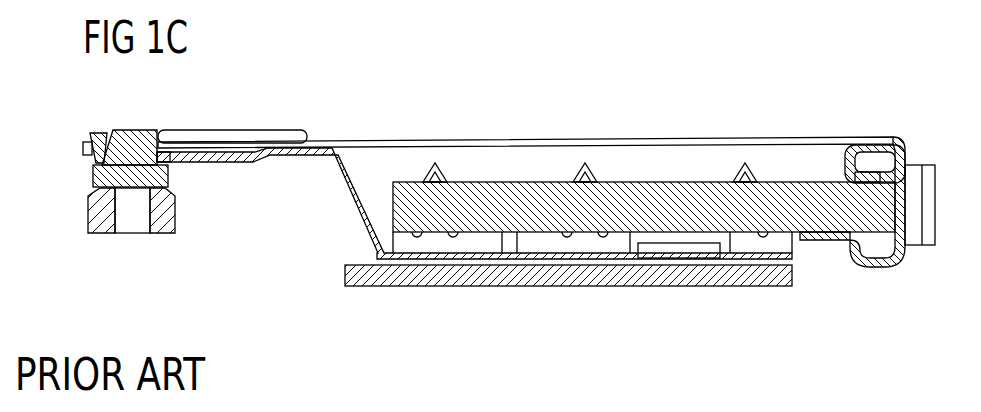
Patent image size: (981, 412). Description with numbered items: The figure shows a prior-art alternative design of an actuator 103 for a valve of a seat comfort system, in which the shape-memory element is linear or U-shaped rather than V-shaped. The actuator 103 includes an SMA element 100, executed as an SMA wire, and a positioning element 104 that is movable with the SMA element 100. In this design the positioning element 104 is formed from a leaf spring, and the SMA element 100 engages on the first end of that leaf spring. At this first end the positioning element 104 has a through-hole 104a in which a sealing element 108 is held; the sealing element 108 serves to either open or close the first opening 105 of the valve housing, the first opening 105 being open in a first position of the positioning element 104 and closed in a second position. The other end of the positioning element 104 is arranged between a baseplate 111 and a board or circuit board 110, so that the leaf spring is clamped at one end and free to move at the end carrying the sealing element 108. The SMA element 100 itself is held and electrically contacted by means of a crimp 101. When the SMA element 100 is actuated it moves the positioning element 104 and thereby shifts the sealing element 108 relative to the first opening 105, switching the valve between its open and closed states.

The SMA element 100 is at (525, 138).
The crimp 101 is at (903, 150).
The actuator 103 is at (450, 102).
The positioning element 104 is at (338, 229).
The through-hole 104a is at (167, 168).
The first opening 105 is at (132, 223).
The sealing element 108 is at (133, 133).
The circuit board 110 is at (667, 184).
The baseplate 111 is at (570, 285).